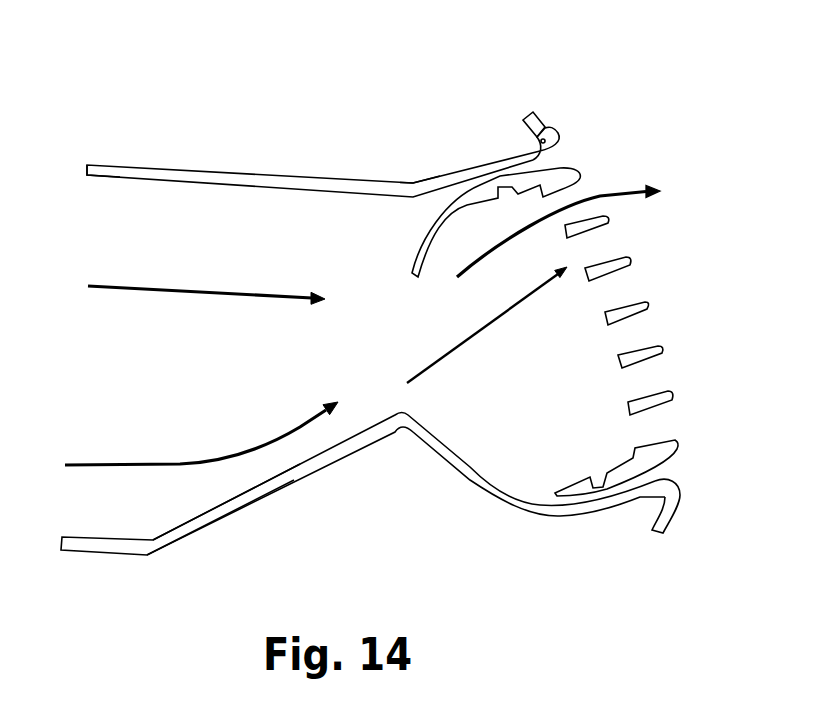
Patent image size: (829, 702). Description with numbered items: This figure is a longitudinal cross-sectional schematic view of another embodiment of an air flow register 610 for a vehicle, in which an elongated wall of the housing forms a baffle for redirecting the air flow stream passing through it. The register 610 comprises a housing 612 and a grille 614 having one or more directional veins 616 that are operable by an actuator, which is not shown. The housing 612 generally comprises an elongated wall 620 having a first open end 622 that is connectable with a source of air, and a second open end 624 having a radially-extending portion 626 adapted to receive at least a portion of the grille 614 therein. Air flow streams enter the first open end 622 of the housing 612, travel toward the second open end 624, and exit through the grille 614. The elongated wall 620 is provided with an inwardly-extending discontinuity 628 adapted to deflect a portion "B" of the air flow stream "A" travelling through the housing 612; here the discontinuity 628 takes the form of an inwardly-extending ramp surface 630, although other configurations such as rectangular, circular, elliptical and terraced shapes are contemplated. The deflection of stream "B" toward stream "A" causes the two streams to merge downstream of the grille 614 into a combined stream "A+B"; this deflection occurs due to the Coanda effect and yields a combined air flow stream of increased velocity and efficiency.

The register 610 is at (346, 129).
The housing 612 is at (385, 173).
The grille 614 is at (595, 178).
The directional veins 616 is at (658, 356).
The elongated wall 620 is at (225, 173).
The first open end 622 is at (87, 172).
The second open end 624 is at (428, 177).
The radially-extending portion 626 is at (545, 132).
The inwardly-extending discontinuity 628 is at (287, 483).
The inwardly-extending ramp surface 630 is at (240, 494).